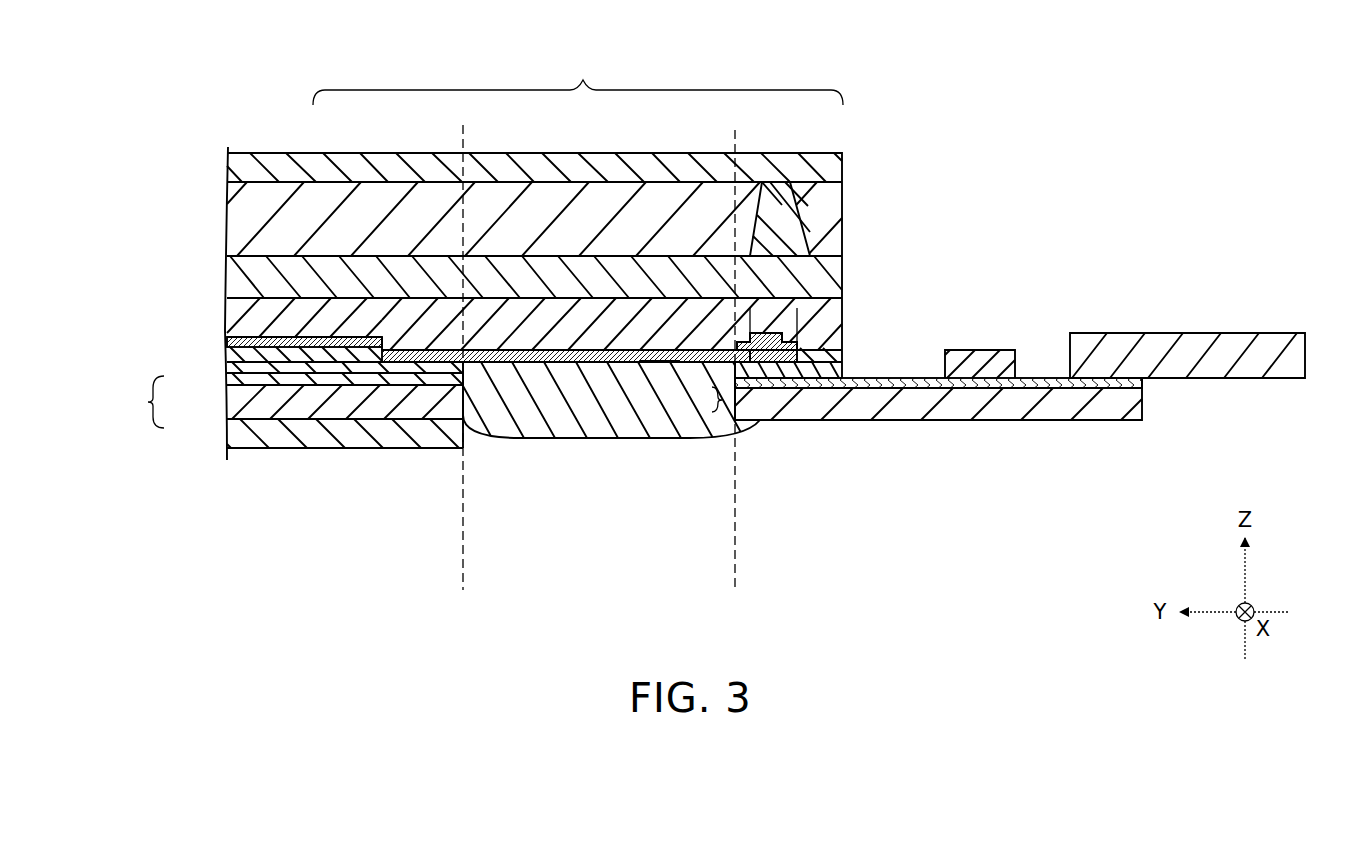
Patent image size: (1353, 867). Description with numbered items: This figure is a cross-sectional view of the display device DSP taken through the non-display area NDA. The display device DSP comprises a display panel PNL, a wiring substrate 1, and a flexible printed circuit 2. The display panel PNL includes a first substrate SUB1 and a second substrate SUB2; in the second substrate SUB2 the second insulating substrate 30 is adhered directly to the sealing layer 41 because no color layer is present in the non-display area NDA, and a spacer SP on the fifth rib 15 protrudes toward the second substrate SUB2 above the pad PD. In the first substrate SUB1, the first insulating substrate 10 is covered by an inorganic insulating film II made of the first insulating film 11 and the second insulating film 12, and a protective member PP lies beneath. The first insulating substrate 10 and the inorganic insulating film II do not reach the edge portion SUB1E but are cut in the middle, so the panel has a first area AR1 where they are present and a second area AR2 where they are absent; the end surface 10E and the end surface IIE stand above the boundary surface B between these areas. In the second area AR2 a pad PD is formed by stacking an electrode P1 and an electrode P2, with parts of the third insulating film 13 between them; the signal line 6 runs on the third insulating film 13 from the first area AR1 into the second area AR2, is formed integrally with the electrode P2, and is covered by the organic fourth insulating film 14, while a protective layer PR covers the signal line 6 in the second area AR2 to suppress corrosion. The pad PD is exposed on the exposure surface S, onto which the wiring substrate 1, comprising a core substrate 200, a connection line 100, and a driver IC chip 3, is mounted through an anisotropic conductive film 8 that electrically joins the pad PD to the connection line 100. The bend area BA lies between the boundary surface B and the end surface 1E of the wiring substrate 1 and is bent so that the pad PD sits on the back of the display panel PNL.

The wiring substrate 1 is at (708, 401).
The end surface of the wiring substrate 1E is at (707, 418).
The flexible printed circuit 2 is at (1187, 377).
The driver IC chip 3 is at (980, 341).
The signal line 6 is at (290, 336).
The anisotropic conductive film 8 is at (817, 366).
The first insulating substrate 10 is at (313, 410).
The end surface of the first insulating substrate 10E is at (486, 439).
The first insulating film 11 is at (314, 405).
The second insulating film 12 is at (314, 380).
The third insulating film 13 is at (528, 351).
The fourth insulating film 14 is at (514, 324).
The rib 15 is at (514, 277).
The second insulating substrate 30 is at (514, 167).
The sealing layer 41 is at (514, 219).
The connection line 100 is at (938, 423).
The core substrate 200 is at (951, 440).
The protective member PP is at (195, 316).
The inorganic insulating film II is at (146, 402).
The end surface of the inorganic insulating film IIE is at (515, 424).
The protective layer PR is at (611, 422).
The exposure surface S is at (655, 421).
The electrode P1 is at (784, 412).
The electrode P2 is at (723, 331).
The pad PD is at (767, 324).
The display panel PNL is at (829, 138).
The display device DSP is at (733, 70).
The non-display area NDA is at (578, 79).
The boundary surface B is at (463, 346).
The bend area BA is at (732, 573).
The first area AR1 is at (463, 500).
The second area AR2 is at (463, 508).
The spacer SP is at (819, 219).
The first substrate SUB1 is at (900, 310).
The edge portion of the first substrate SUB1E is at (905, 339).
The second substrate SUB2 is at (592, 161).